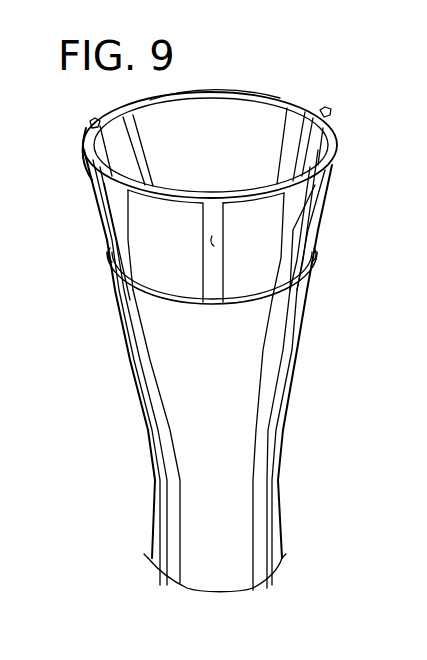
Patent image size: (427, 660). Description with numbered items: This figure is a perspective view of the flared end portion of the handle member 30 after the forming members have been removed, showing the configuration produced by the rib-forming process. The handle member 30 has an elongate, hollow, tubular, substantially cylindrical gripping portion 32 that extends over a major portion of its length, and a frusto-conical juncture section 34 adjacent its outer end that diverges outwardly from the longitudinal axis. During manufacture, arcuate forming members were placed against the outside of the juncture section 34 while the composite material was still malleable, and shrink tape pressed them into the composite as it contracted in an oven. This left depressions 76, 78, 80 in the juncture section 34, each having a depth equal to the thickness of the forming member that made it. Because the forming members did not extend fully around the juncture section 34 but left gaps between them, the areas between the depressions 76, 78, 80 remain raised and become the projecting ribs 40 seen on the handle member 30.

The handle member 30 is at (298, 352).
The gripping portion 32 is at (260, 522).
The juncture section 34 is at (330, 148).
The projecting ribs 40 is at (92, 122).
The depression 76 is at (117, 223).
The depression 78 is at (310, 215).
The depression 80 is at (250, 92).